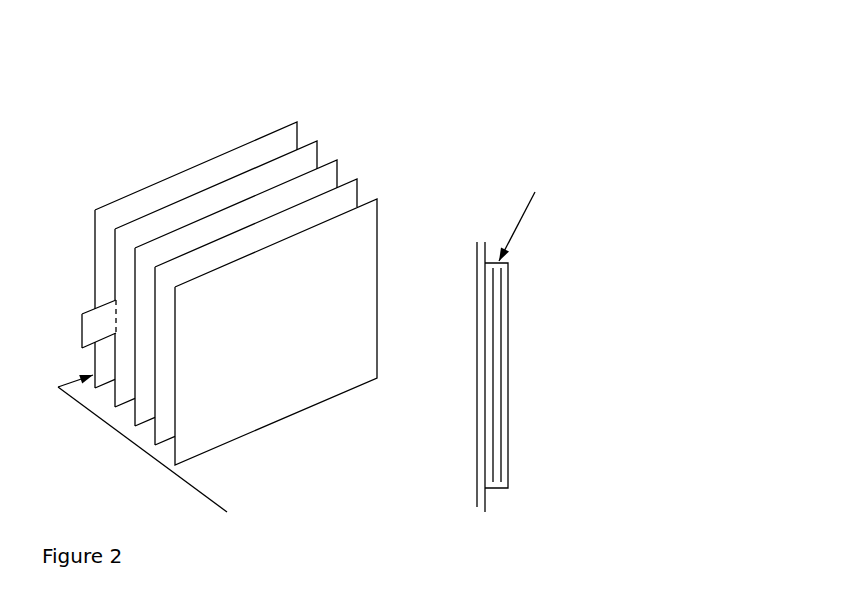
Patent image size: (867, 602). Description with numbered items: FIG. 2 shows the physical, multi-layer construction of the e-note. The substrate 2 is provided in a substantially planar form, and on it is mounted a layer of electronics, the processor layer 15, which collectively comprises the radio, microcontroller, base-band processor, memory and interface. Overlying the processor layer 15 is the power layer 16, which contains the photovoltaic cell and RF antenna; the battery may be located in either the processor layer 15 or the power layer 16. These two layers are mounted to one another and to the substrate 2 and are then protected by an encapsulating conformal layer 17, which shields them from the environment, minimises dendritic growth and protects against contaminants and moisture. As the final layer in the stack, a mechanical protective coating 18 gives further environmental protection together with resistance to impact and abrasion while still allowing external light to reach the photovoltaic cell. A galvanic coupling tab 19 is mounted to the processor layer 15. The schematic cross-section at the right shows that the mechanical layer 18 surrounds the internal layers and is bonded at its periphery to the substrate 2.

The substrate 2 is at (476, 442).
The processor layer 15 is at (318, 148).
The power layer 16 is at (337, 170).
The encapsulating conformal layer 17 is at (357, 190).
The mechanical protective coating 18 is at (377, 212).
The galvanic coupling tab 19 is at (61, 333).